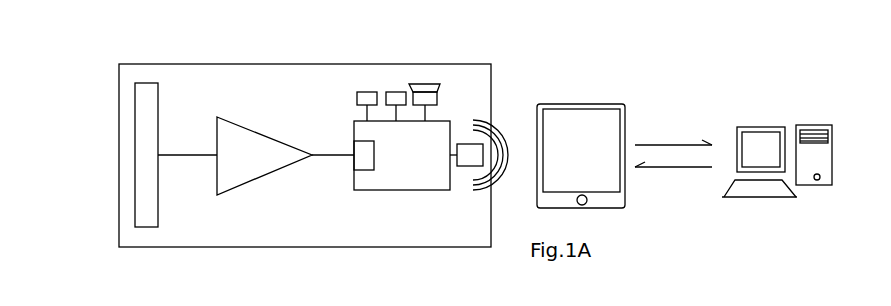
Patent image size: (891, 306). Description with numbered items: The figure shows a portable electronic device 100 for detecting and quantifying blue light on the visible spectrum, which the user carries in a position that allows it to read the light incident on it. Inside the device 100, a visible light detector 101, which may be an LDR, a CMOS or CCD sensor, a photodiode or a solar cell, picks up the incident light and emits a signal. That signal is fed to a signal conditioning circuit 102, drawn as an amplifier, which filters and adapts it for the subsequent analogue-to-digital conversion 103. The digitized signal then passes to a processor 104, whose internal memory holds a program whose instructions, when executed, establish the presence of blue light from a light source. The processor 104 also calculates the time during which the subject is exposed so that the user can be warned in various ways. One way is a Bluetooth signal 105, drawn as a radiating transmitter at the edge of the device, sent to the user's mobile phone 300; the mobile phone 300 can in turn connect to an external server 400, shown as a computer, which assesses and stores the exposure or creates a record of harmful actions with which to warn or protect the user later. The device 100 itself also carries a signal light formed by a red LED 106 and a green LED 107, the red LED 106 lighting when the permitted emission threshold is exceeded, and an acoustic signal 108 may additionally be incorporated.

The portable electronic device 100 is at (254, 97).
The visible light detector 101 is at (148, 117).
The signal conditioning circuit 102 is at (285, 156).
The analogue-to-digital conversion 103 is at (364, 151).
The processor 104 is at (405, 155).
The Bluetooth signal 105 is at (477, 152).
The red LED 106 is at (369, 92).
The green LED 107 is at (397, 92).
The acoustic signal 108 is at (429, 84).
The mobile phone 300 is at (566, 158).
The external server 400 is at (770, 187).